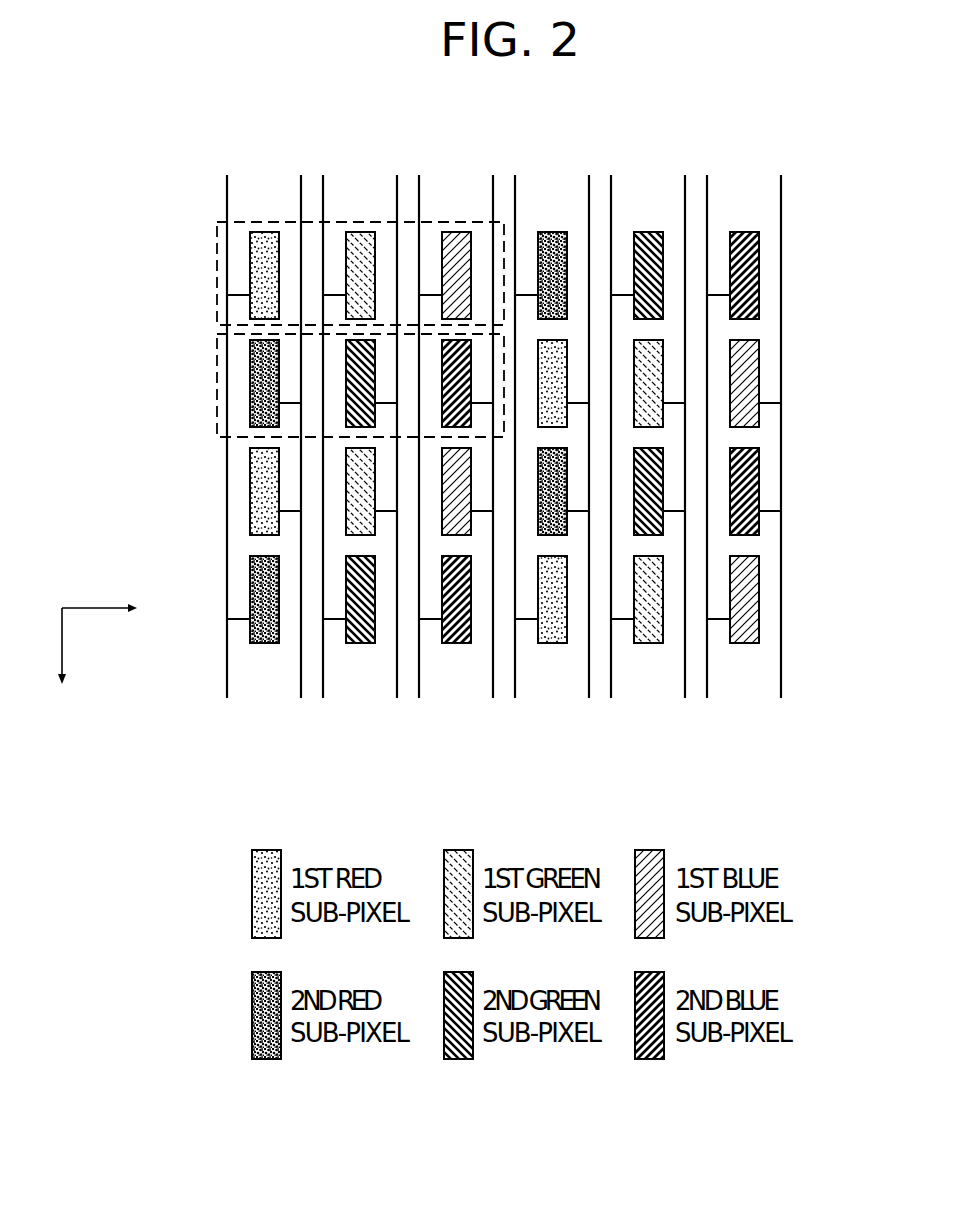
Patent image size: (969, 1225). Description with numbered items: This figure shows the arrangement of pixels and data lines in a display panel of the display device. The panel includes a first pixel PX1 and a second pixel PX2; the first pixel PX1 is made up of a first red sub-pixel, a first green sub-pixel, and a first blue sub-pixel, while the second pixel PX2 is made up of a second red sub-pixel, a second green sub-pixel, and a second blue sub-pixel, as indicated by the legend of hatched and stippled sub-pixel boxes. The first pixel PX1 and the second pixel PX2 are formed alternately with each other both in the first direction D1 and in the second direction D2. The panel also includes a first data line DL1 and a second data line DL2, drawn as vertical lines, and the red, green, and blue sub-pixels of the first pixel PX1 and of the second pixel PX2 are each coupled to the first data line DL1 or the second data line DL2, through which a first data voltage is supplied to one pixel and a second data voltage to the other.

The first pixel PX1 is at (217, 270).
The second pixel PX2 is at (217, 385).
The first data line DL1 is at (227, 693).
The second data line DL2 is at (300, 693).
The first direction D1 is at (115, 609).
The second direction D2 is at (61, 662).